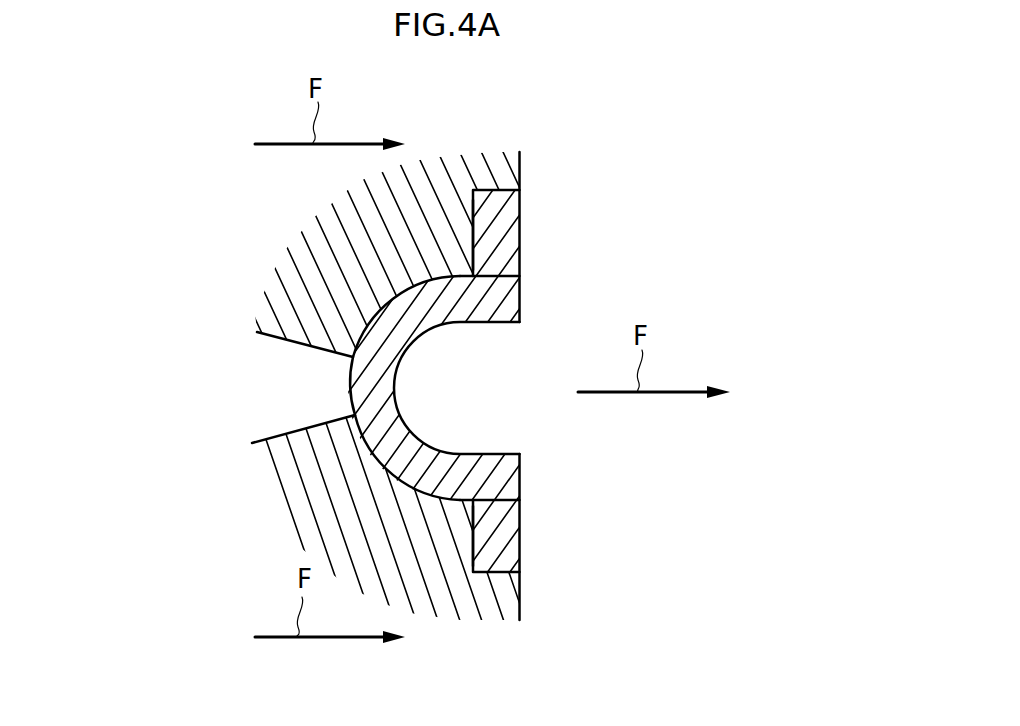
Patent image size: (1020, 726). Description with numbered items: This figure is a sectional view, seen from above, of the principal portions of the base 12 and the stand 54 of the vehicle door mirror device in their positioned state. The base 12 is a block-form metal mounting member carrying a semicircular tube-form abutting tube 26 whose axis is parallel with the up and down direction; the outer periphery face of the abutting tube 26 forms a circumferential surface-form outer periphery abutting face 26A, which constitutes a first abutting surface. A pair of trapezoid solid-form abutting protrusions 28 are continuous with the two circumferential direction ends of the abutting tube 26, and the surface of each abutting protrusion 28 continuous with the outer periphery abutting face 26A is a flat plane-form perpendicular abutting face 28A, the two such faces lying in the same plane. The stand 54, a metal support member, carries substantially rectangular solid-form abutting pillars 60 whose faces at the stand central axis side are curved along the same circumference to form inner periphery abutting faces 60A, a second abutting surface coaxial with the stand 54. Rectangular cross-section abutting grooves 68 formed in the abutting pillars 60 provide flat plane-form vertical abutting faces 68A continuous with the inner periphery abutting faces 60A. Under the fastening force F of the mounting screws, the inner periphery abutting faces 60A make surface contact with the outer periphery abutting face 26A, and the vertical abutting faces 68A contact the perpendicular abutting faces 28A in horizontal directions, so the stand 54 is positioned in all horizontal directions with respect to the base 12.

The base 12 is at (522, 302).
The abutting tube 26 is at (396, 392).
The outer periphery abutting face 26A is at (350, 393).
The abutting protrusion 28 is at (522, 221).
The perpendicular abutting face 28A is at (467, 286).
The abutting pillar 60 is at (283, 341).
The inner periphery abutting face 60A is at (413, 290).
The abutting groove 68 is at (522, 198).
The vertical abutting face 68A is at (473, 248).
The stand 54 is at (266, 333).